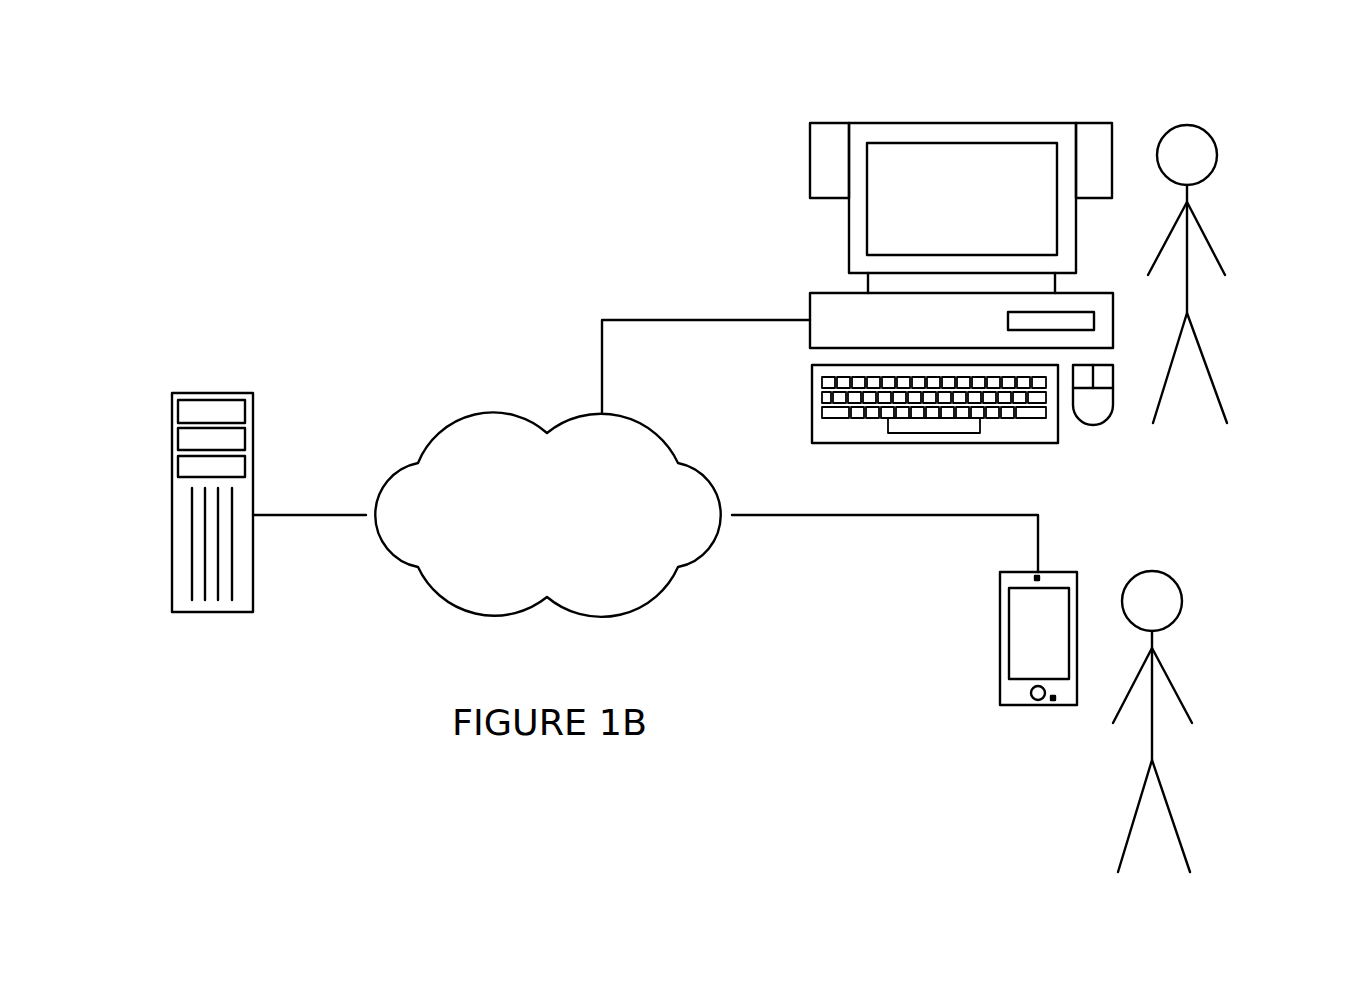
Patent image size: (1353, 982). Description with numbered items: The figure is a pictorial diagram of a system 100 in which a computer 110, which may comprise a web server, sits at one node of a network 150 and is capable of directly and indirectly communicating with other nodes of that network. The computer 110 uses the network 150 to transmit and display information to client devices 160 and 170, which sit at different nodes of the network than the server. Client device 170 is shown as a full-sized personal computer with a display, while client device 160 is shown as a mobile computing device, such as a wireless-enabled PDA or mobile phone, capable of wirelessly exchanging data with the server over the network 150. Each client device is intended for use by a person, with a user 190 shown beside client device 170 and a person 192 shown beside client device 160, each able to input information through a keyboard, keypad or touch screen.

The system 100 is at (214, 72).
The computer 110 is at (172, 408).
The network 150 is at (492, 410).
The client device 160 is at (1000, 598).
The client device 170 is at (963, 123).
The user 190 is at (1215, 217).
The person 192 is at (1178, 647).